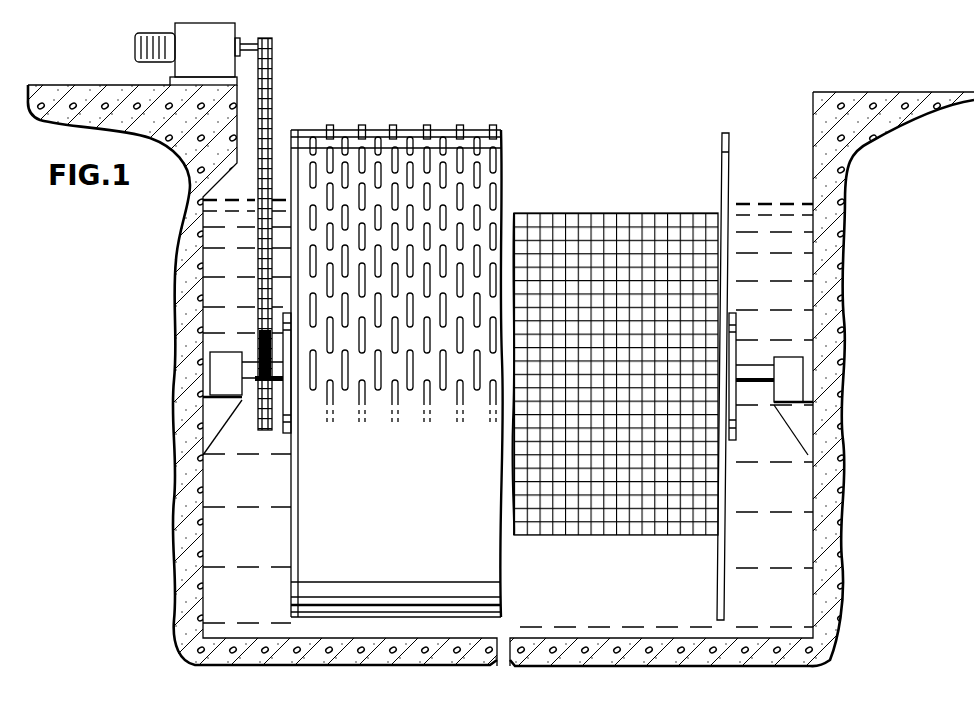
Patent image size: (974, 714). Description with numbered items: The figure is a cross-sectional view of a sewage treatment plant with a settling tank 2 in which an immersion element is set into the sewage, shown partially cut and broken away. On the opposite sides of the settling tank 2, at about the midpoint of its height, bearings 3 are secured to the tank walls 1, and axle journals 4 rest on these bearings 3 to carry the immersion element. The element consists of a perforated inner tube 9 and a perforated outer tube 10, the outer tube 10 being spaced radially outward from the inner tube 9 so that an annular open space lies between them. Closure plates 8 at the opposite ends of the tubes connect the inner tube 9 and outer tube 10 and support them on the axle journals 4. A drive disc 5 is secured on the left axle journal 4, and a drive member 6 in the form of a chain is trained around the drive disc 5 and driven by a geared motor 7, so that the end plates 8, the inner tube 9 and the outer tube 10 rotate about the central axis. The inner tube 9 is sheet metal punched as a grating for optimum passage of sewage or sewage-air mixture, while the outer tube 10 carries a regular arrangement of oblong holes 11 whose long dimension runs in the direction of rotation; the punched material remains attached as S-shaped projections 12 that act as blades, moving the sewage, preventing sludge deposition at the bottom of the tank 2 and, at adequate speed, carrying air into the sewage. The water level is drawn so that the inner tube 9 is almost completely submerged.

The pit wall 1 is at (848, 160).
The settling tank 2 is at (785, 503).
The bearings 3 is at (208, 410).
The axle journals 4 is at (247, 385).
The drive disc 5 is at (260, 342).
The drive member 6 is at (259, 152).
The geared motor 7 is at (185, 62).
The closure plates 8 is at (291, 522).
The perforated inner tube 9 is at (610, 232).
The perforated outer tube 10 is at (436, 138).
The oblong holes 11 is at (331, 126).
The projections 12 is at (363, 126).